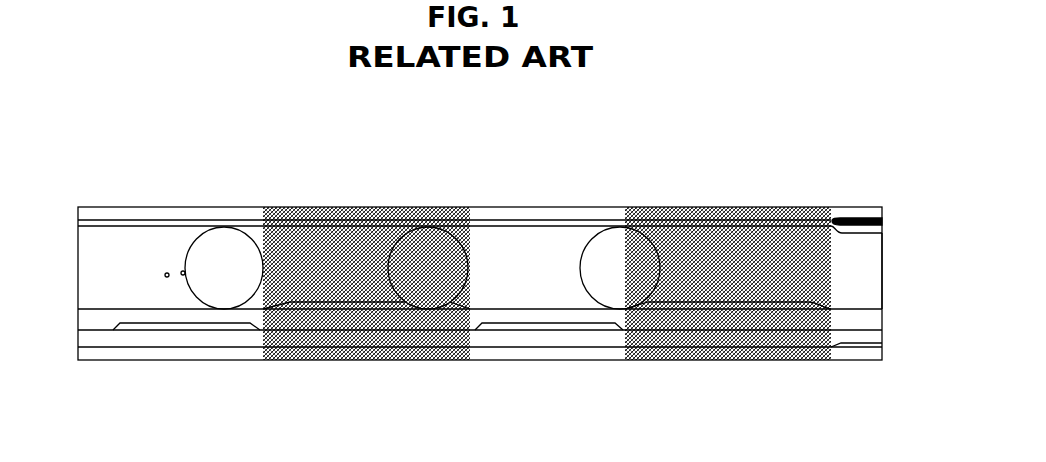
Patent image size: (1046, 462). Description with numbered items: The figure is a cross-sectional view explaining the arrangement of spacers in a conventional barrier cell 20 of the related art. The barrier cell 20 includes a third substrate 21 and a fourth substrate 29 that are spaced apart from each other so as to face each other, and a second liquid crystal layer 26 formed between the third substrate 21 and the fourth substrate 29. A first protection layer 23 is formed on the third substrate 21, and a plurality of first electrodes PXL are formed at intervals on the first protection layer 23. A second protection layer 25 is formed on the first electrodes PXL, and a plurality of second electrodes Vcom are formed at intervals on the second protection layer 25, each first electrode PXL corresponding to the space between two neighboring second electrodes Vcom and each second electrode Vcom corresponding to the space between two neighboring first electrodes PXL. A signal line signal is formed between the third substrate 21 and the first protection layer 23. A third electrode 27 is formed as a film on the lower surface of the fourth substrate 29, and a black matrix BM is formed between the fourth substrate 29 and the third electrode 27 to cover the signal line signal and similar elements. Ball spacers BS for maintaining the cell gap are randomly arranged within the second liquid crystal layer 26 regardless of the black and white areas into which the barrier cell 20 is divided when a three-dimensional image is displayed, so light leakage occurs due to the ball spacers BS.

The barrier cell 20 is at (514, 111).
The third substrate 21 is at (882, 348).
The first protection layer 23 is at (882, 330).
The second protection layer 25 is at (882, 312).
The second liquid crystal layer 26 is at (889, 235).
The third electrode 27 is at (882, 233).
The fourth substrate 29 is at (882, 210).
The black matrix BM is at (850, 217).
The ball spacer BS is at (224, 235).
The first electrode PXL is at (205, 327).
The second electrode Vcom is at (316, 305).
The signal line signal is at (853, 345).